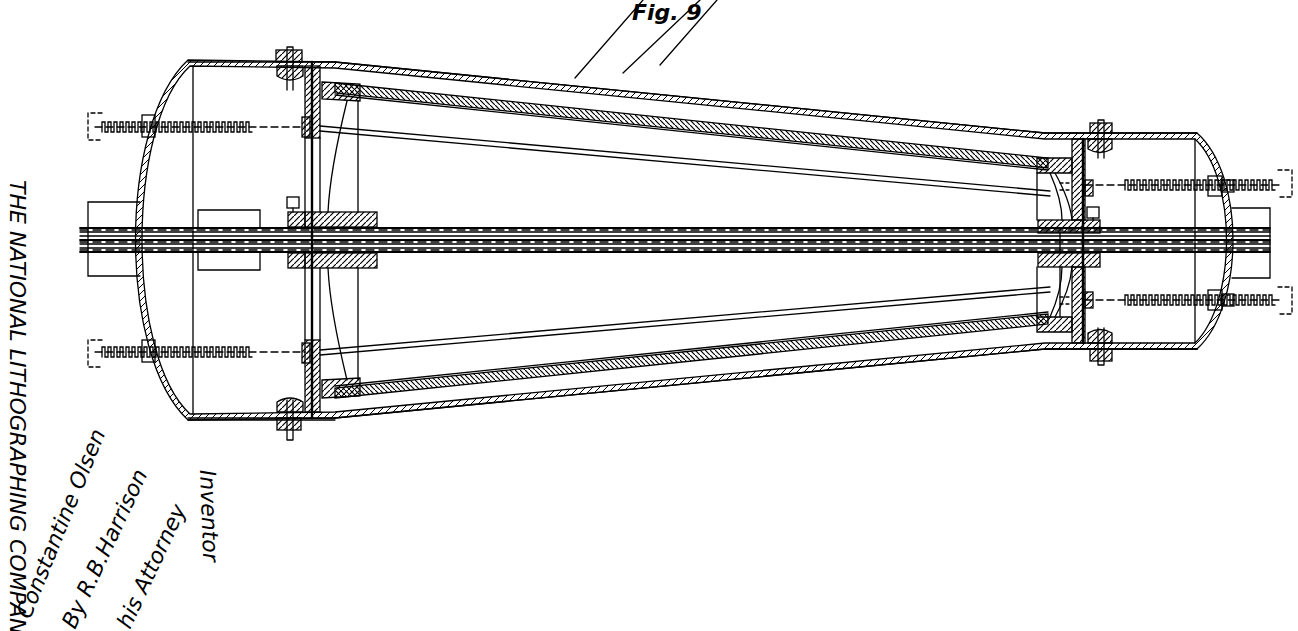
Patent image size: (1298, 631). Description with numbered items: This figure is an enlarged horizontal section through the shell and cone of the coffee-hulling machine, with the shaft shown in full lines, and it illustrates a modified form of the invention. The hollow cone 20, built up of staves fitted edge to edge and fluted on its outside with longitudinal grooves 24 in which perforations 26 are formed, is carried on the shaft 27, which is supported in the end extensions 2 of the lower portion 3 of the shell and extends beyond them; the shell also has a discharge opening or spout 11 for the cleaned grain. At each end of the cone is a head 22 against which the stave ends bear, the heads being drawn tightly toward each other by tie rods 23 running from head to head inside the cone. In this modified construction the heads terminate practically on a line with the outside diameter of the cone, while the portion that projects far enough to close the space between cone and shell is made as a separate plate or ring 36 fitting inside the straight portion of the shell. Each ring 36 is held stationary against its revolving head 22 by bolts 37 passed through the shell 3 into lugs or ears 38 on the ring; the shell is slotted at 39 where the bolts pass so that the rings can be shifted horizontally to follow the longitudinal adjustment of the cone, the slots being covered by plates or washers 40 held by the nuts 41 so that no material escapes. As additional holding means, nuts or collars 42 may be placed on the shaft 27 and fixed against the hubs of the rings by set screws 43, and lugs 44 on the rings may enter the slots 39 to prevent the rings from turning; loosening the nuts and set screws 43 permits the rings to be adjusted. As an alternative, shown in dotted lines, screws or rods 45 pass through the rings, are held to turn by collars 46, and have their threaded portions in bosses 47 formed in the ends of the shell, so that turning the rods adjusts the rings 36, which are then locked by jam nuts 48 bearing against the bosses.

The end extension 2 is at (108, 214).
The lower portion of the shell 3 is at (148, 163).
The discharge opening or spout 11 is at (236, 270).
The cone 20 is at (483, 97).
The head 22 is at (335, 100).
The tie rod 23 is at (760, 168).
The longitudinal groove 24 is at (863, 143).
The perforation 26 is at (933, 160).
The shaft 27 is at (85, 255).
The plate or ring 36 is at (306, 373).
The bolt 37 is at (290, 47).
The lug or ear 38 is at (300, 78).
The slot 39 is at (255, 422).
The plate or washer 40 is at (317, 66).
The nut 41 is at (279, 56).
The nut or collar 42 is at (1103, 229).
The set screw 43 is at (1100, 212).
The lug 44 is at (1077, 350).
The screw or rod 45 is at (231, 352).
The collar 46 is at (303, 348).
The boss 47 is at (150, 343).
The jam nut 48 is at (142, 360).